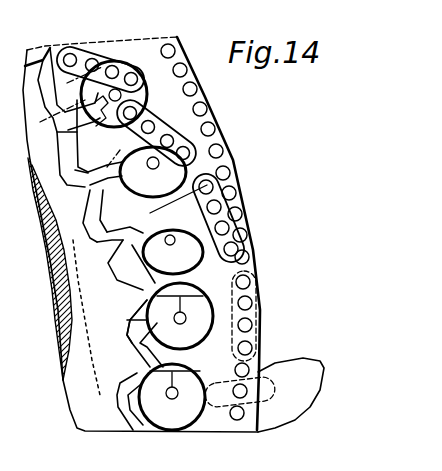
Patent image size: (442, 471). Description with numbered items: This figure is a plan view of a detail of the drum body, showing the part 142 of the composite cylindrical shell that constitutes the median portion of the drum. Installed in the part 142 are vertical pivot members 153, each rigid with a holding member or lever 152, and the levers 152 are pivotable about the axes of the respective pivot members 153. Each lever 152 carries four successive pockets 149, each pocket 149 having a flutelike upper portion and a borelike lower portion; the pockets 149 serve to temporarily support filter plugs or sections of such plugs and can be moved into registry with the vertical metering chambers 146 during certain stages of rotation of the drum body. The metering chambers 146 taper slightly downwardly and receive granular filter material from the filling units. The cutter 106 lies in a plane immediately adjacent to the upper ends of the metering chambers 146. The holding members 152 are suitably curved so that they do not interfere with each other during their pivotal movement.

The cutter 106 is at (274, 378).
The part of the shell 142 is at (218, 233).
The metering chamber 146 is at (218, 150).
The pocket 149 is at (214, 206).
The holding member or lever 152 is at (150, 262).
The pivot member 153 is at (176, 247).